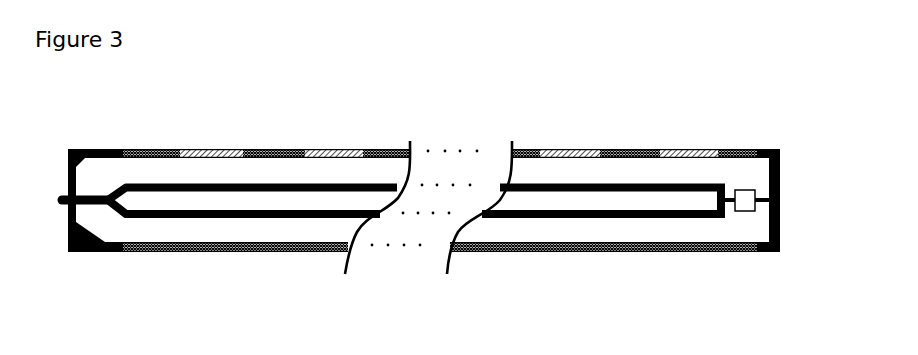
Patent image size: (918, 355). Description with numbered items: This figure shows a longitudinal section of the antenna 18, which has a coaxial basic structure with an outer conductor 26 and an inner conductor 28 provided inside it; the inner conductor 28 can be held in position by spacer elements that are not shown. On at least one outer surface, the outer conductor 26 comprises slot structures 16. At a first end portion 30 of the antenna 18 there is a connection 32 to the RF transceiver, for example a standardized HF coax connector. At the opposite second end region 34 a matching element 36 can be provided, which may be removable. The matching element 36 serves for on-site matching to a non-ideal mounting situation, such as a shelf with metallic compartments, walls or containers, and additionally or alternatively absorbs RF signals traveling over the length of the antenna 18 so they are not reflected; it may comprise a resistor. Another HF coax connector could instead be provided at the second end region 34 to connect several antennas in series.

The slot structures 16 is at (213, 148).
The antenna 18 is at (432, 92).
The outer conductor 26 is at (305, 253).
The inner conductor 28 is at (587, 198).
The first end portion 30 is at (107, 253).
The connection 32 is at (60, 196).
The second end region 34 is at (763, 149).
The matching element 36 is at (748, 212).